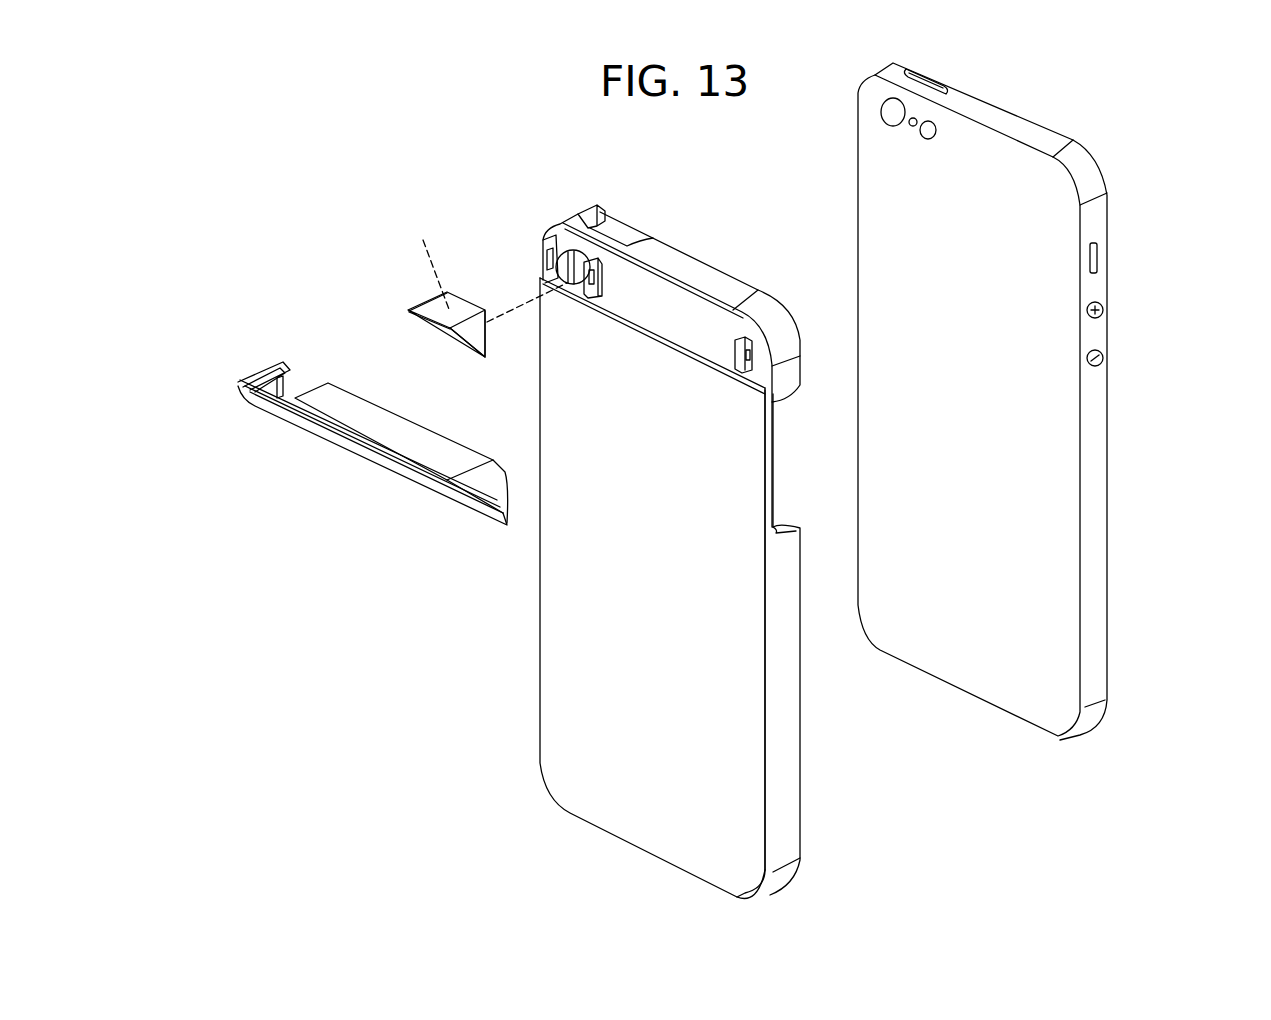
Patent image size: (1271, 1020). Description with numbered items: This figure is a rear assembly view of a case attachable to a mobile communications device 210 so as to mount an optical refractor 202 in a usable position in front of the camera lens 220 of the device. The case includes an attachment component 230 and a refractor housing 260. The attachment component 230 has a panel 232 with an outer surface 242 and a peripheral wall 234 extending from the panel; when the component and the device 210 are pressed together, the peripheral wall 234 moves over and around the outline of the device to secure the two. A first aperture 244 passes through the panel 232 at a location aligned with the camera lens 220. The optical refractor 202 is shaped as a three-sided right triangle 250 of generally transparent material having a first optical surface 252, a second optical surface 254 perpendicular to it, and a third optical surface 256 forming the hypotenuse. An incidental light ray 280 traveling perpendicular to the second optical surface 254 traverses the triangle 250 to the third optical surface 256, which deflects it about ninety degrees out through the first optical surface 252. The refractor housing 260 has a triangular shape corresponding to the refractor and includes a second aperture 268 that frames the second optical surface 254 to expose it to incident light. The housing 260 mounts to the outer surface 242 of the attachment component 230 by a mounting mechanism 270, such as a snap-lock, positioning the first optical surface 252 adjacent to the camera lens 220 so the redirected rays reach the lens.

The mobile communications device 210 is at (1096, 440).
The camera lens 220 is at (890, 110).
The attachment component 230 is at (773, 320).
The panel 232 is at (772, 462).
The peripheral wall 234 is at (783, 663).
The outer surface 242 is at (578, 673).
The first aperture 244 is at (556, 228).
The three-sided right triangle 250 is at (463, 302).
The first optical surface 252 is at (493, 337).
The second optical surface 254 is at (430, 303).
The third optical surface 256 is at (446, 340).
The optical refractor 202 is at (430, 328).
The refractor housing 260 is at (347, 440).
The second aperture 268 is at (292, 373).
The mounting mechanism 270 is at (593, 262).
The incidental light ray 280 is at (423, 240).